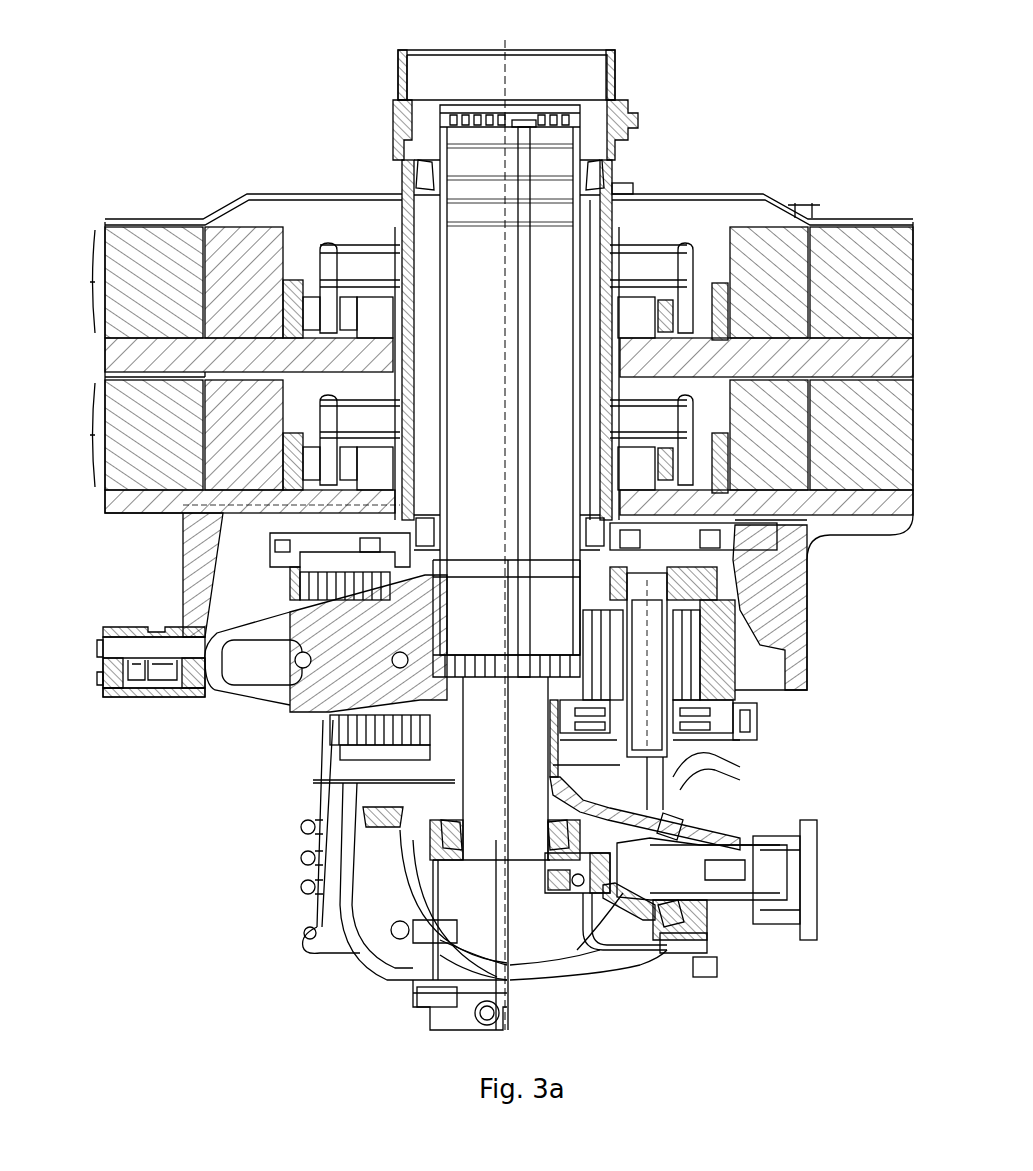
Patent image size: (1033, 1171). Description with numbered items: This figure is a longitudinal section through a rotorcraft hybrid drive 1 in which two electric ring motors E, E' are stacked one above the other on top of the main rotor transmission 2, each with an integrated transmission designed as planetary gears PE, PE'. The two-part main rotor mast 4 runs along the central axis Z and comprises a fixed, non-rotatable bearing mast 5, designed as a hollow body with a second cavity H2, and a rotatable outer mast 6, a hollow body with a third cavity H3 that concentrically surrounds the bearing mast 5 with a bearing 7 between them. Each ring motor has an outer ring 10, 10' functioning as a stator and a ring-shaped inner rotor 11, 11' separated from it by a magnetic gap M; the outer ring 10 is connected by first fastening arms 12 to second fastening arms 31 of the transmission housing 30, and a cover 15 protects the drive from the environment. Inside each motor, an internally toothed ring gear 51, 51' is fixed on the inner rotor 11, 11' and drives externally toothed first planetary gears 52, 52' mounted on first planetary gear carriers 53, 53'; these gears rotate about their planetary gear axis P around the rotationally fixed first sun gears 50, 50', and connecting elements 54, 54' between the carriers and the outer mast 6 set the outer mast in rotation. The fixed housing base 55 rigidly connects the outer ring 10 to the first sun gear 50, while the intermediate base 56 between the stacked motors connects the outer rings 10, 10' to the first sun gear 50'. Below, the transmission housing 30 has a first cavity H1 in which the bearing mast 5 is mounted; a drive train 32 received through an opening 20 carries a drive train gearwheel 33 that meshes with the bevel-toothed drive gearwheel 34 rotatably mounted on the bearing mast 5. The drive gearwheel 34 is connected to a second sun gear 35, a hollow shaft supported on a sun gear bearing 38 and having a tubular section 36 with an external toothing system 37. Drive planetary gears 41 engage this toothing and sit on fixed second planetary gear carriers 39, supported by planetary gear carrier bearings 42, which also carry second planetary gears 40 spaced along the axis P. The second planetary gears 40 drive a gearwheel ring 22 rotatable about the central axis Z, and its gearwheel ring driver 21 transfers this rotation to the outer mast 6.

The hybrid drive 1 is at (857, 212).
The main rotor transmission 2 is at (828, 673).
The main rotor mast 4 is at (626, 88).
The bearing mast 5 is at (577, 115).
The outer mast 6 is at (612, 195).
The bearing 7 is at (418, 520).
The outer ring 10 is at (132, 438).
The outer ring 10' is at (132, 286).
The inner rotor 11 is at (172, 425).
The inner rotor 11' is at (171, 282).
The first fastening arm 12 is at (198, 539).
The cover 15 is at (740, 196).
The opening 20 is at (727, 923).
The gearwheel ring driver 21 is at (337, 557).
The gearwheel ring 22 is at (323, 577).
The transmission housing 30 is at (740, 600).
The second fastening arm 31 is at (103, 657).
The drive train 32 is at (730, 877).
The drive train gearwheel 33 is at (632, 810).
The drive gearwheel 34 is at (660, 805).
The second sun gear 35 is at (560, 797).
The tubular section 36 is at (452, 768).
The external toothing system 37 is at (440, 742).
The sun gear bearing 38 is at (400, 940).
The second planetary gear carrier 39 is at (655, 657).
The second planetary gear 40 is at (800, 522).
The drive planetary gear 41 is at (757, 727).
The planetary gear carrier bearing 42 is at (687, 662).
The first sun gear 50 is at (781, 393).
The first sun gear 50' is at (284, 306).
The ring gear 51 is at (828, 388).
The ring gear 51' is at (200, 306).
The first planetary gear 52 is at (811, 435).
The first planetary gear 52' is at (236, 303).
The first planetary gear carrier 53 is at (777, 362).
The first planetary gear carrier 53' is at (306, 301).
The connecting element 54 is at (837, 282).
The connecting element 54' is at (321, 217).
The housing base 55 is at (753, 507).
The intermediate base 56 is at (133, 355).
The electric drive E is at (84, 435).
The electric drive E' is at (83, 281).
The first cavity H1 is at (297, 710).
The second cavity H2 is at (687, 395).
The third cavity H3 is at (590, 215).
The magnetic gap M is at (804, 200).
The planetary gear axis P is at (644, 516).
The planetary gear PE is at (782, 353).
The planetary gear PE' is at (285, 182).
The central axis Z is at (503, 529).